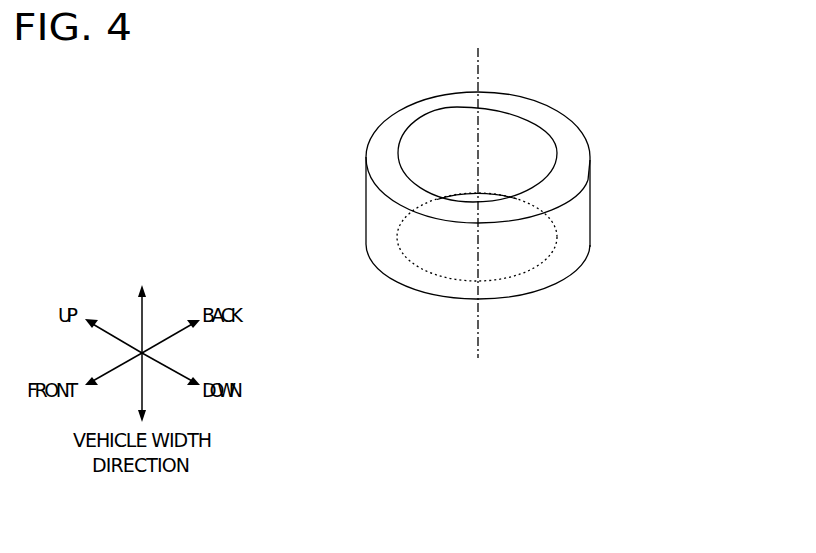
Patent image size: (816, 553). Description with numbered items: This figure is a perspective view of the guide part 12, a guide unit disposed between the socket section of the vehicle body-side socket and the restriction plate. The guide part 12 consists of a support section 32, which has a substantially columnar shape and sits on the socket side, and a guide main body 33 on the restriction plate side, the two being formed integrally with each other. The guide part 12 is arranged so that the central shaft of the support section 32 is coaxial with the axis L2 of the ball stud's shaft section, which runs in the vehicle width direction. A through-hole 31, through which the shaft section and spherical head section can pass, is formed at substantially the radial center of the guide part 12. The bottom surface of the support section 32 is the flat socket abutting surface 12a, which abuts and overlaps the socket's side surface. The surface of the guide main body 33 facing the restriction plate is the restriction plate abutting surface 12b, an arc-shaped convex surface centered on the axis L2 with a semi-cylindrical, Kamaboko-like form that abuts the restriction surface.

The guide part 12 is at (522, 197).
The socket abutting surface 12a is at (550, 270).
The restriction plate abutting surface 12b is at (386, 162).
The through-hole 31 is at (435, 136).
The support section 32 is at (580, 233).
The guide main body 33 is at (500, 141).
The axis L2 is at (476, 343).